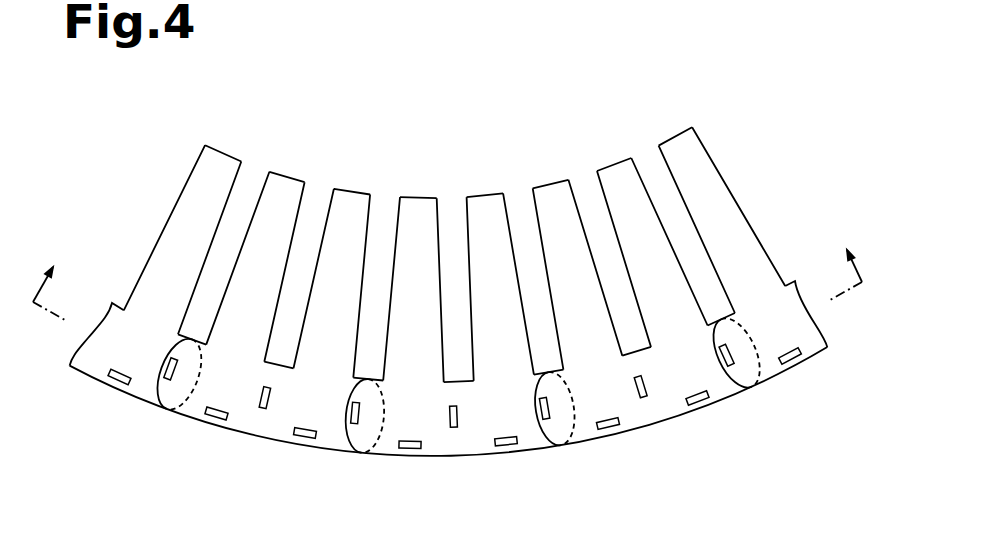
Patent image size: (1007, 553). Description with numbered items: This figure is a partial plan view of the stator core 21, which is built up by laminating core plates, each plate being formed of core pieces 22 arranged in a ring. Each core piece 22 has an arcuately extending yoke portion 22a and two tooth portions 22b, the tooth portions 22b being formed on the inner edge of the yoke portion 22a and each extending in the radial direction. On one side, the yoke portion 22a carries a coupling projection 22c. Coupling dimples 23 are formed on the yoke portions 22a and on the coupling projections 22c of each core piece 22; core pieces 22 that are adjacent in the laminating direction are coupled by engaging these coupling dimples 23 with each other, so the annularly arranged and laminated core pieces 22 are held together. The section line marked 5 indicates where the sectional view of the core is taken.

The section line 5- 5 is at (447, 272).
The stator core 21 is at (195, 419).
The core piece 22 is at (253, 436).
The yoke portion 22a is at (507, 452).
The tooth portion 22b is at (515, 164).
The coupling projection 22c is at (345, 381).
The coupling dimple 23 is at (411, 441).